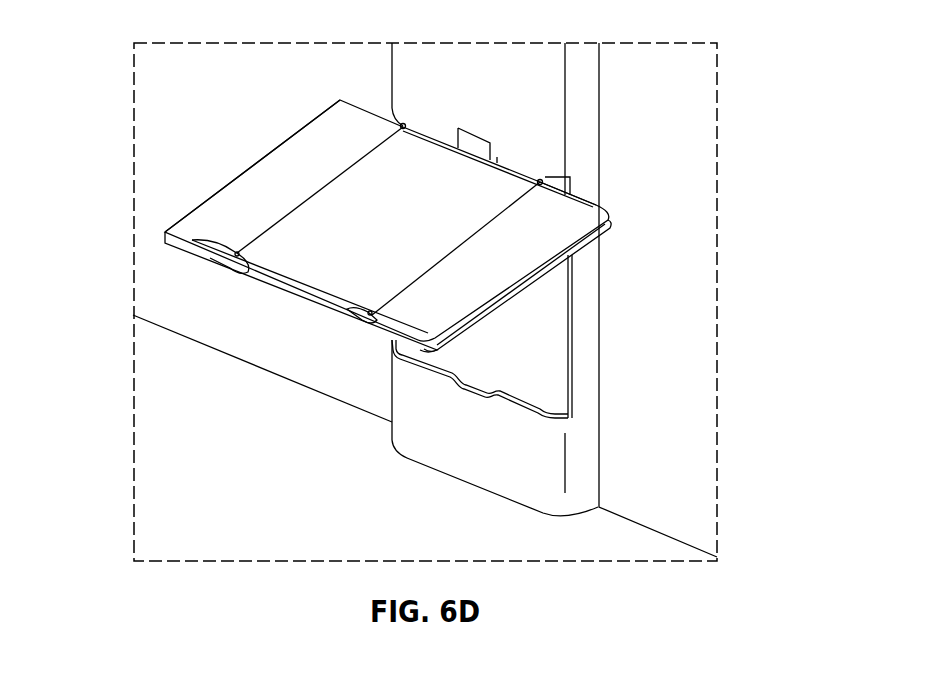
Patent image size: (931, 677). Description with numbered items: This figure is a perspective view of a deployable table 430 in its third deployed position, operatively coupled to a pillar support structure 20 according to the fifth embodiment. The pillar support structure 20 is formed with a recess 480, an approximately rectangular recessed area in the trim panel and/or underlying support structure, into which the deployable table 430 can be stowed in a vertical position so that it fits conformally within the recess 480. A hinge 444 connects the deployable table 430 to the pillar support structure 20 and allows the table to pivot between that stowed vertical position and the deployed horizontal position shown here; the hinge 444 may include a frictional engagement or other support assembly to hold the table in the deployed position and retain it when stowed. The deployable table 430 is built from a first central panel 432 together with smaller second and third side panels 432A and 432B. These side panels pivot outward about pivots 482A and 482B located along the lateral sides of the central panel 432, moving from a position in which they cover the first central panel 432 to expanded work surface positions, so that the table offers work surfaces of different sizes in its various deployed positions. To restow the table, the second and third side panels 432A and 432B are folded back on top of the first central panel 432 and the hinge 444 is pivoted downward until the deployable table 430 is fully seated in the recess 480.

The pillar support structure 20 is at (586, 117).
The deployable table 430 is at (435, 217).
The first central panel 432 is at (435, 220).
The second side panel 432A is at (203, 225).
The third side panel 432B is at (547, 228).
The hinge 444 is at (480, 135).
The recess 480 is at (537, 347).
The pivot 482A is at (401, 125).
The pivot 482B is at (547, 177).